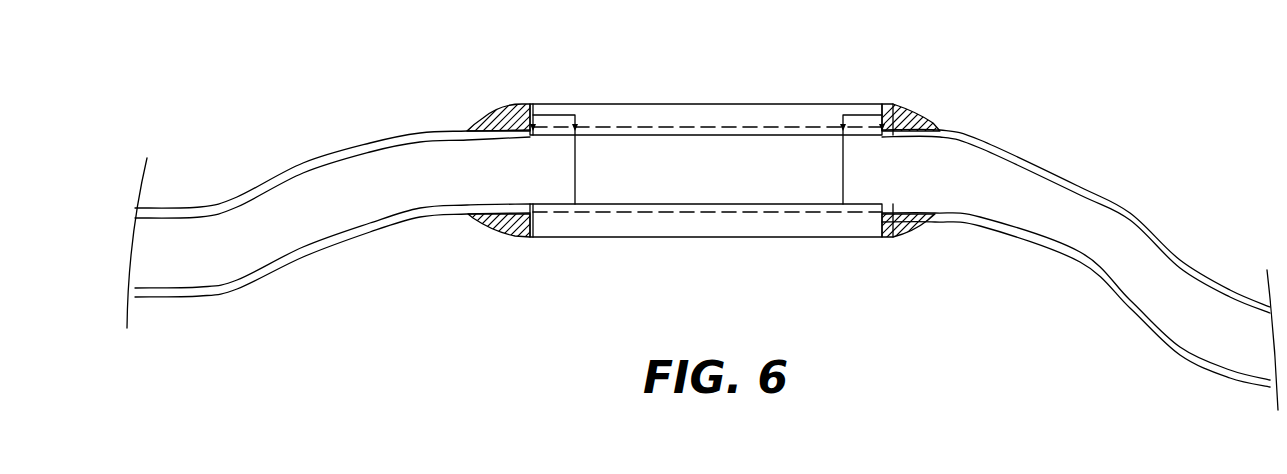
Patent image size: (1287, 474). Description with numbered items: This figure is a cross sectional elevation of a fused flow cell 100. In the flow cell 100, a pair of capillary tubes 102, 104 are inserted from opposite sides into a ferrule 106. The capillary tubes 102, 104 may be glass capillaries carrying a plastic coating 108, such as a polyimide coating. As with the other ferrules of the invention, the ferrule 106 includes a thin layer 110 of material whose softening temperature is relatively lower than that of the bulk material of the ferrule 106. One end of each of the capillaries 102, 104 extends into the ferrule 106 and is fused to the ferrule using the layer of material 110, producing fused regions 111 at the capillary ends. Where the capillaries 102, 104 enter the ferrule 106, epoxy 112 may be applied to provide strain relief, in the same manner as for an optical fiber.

The flow cell 100 is at (702, 260).
The capillary tube 102 is at (331, 140).
The capillary tube 104 is at (1136, 320).
The ferrule 106 is at (697, 113).
The plastic coating 108 is at (1130, 217).
The thin layer of material 110 is at (738, 133).
The fused region 111 is at (552, 113).
The epoxy 112 is at (485, 118).